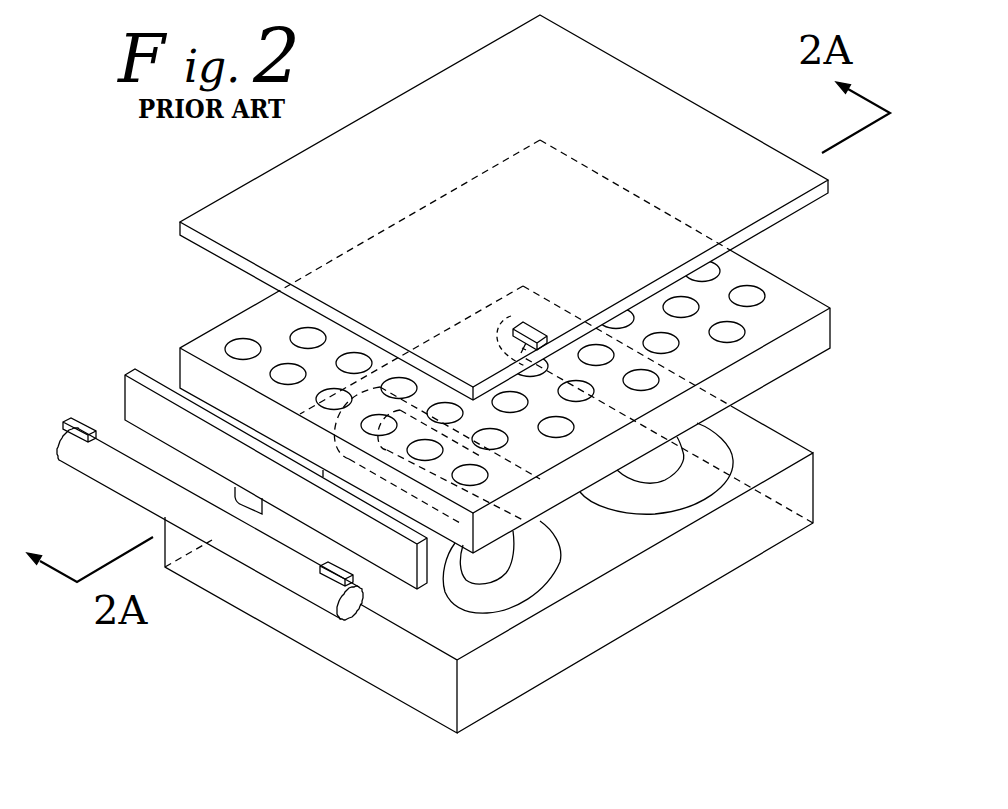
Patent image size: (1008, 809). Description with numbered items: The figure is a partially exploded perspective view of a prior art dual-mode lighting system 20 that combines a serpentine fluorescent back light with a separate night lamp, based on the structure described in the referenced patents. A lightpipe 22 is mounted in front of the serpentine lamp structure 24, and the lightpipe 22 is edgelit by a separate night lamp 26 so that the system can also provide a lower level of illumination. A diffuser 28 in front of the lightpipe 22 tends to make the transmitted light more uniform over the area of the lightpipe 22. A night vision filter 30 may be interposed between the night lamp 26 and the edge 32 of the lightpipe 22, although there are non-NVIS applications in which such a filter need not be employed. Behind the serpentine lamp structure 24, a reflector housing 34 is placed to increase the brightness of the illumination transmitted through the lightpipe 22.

The dual-mode lighting system 20 is at (57, 481).
The lightpipe 22 is at (818, 330).
The serpentine lamp structure 24 is at (717, 460).
The night lamp 26 is at (127, 478).
The diffuser 28 is at (690, 123).
The night vision filter 30 is at (130, 404).
The edge of the lightpipe 32 is at (462, 535).
The reflector housing 34 is at (640, 603).